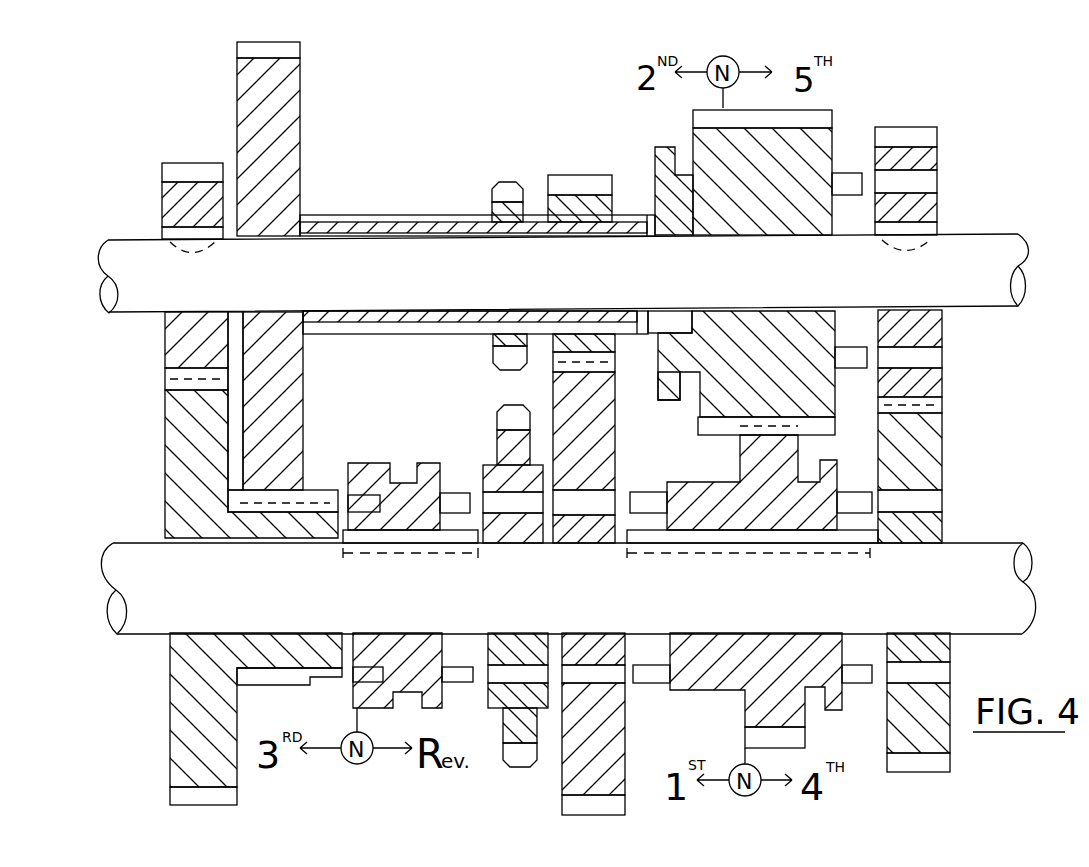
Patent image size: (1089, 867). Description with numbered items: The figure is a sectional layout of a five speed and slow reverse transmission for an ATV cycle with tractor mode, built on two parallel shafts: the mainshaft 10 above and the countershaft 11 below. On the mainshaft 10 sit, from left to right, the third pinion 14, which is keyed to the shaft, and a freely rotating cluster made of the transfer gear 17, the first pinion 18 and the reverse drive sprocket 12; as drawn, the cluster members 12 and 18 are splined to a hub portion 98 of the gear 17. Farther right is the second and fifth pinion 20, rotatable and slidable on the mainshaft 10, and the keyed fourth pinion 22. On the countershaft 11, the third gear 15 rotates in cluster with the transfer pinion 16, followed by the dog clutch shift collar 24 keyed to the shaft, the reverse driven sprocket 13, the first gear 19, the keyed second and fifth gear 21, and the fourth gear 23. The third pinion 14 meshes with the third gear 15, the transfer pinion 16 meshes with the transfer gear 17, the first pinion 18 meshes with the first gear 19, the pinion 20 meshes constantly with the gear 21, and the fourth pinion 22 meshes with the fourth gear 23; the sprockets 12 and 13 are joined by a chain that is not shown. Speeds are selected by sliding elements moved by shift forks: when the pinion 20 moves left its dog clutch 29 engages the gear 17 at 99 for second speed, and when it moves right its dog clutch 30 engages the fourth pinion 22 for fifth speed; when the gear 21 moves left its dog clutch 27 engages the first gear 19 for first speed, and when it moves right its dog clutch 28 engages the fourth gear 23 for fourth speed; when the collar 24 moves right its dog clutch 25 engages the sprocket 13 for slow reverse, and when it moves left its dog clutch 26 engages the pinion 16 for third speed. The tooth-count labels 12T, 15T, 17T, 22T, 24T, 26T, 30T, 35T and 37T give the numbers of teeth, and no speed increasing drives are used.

The mainshaft 10 is at (976, 250).
The countershaft 11 is at (980, 560).
The reverse drive sprocket 12 is at (486, 250).
The tooth count of reverse drive sprocket 12T is at (507, 162).
The reverse driven sprocket 13 is at (520, 767).
The third pinion 14 is at (167, 185).
The third gear 15 is at (234, 580).
The tooth count of fifteen teeth 15T is at (600, 185).
The transfer pinion 16 is at (302, 677).
The transfer gear 17 is at (290, 52).
The tooth count of seventeen teeth 17T is at (192, 148).
The first pinion 18 is at (558, 180).
The first gear 19 is at (618, 812).
The second and fifth pinion 20 is at (805, 110).
The second and fifth gear 21 is at (800, 738).
The fourth pinion 22 is at (931, 159).
The tooth count of twenty-two teeth 22T is at (930, 137).
The fourth gear 23 is at (946, 563).
The dog clutch shift collar 24 is at (397, 566).
The tooth count of twenty-four teeth 24T is at (508, 414).
The dog clutch 25 is at (484, 495).
The dog clutch 26 is at (342, 497).
The tooth count of twenty-six teeth 26T is at (828, 114).
The dog clutch 27 is at (640, 490).
The dog clutch 28 is at (868, 492).
The dog clutch 29 is at (668, 330).
The dog clutch 30 is at (866, 178).
The tooth count of thirty teeth 30T is at (955, 762).
The tooth count of thirty-five teeth 35T is at (178, 797).
The tooth count of thirty-seven teeth 37T is at (248, 52).
The hub portion 98 is at (403, 232).
The engagement location on gear 17 99 is at (629, 232).